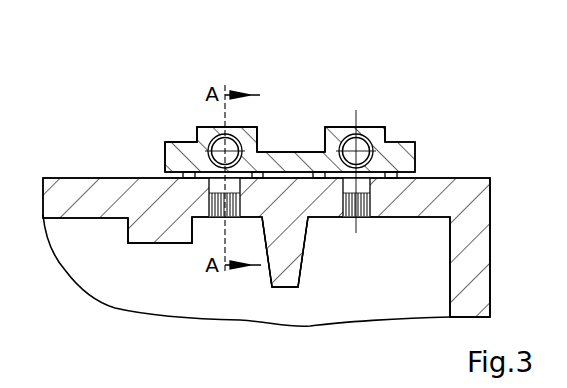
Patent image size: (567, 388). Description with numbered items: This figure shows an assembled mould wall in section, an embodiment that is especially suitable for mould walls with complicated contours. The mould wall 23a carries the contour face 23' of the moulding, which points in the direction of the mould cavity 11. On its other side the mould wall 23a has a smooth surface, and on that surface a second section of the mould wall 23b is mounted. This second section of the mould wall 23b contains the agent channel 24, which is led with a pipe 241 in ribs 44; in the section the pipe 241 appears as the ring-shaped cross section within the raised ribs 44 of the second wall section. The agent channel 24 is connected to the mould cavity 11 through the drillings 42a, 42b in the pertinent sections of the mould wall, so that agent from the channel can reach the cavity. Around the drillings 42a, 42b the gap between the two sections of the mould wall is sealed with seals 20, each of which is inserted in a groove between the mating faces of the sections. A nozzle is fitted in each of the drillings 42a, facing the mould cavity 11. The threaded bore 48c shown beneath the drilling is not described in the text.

The mould cavity 11 is at (406, 258).
The seals 20 is at (400, 140).
The mould wall 23a is at (152, 200).
The second section of the mould wall 23b is at (182, 142).
The contour face 23' is at (331, 266).
The agent channel 24 is at (358, 148).
The pipe 241 is at (212, 133).
The drilling 42a is at (230, 188).
The drilling 42b is at (277, 148).
The ribs 44 is at (339, 132).
The threaded bore 48c is at (214, 218).